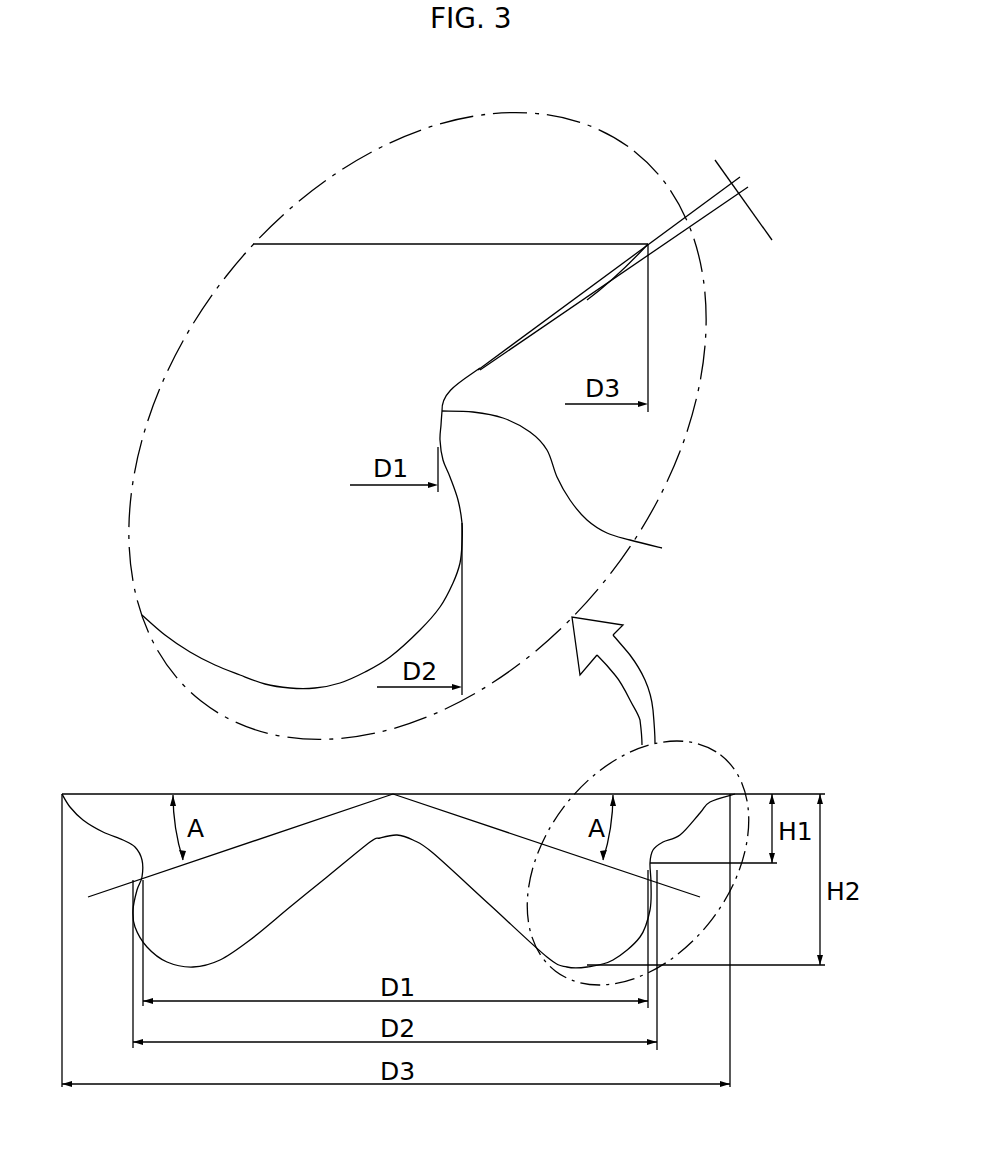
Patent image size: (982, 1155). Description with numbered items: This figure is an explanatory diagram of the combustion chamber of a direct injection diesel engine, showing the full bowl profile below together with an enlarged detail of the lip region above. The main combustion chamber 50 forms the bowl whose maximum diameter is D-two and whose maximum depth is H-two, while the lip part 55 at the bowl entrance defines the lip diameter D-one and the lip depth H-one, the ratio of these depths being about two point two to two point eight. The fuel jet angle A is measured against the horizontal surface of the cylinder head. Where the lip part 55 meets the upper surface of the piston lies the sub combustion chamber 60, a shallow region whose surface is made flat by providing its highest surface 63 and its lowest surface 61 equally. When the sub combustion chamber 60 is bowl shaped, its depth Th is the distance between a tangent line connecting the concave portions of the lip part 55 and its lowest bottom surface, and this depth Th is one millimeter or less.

The main combustion chamber 50 is at (355, 620).
The lip part 55 is at (662, 548).
The sub combustion chamber 60 is at (552, 283).
The lowest surface of the sub combustion chamber 61 is at (716, 206).
The highest surface of the sub combustion chamber 63 is at (713, 205).
The depth of the sub combustion chamber Th is at (754, 200).